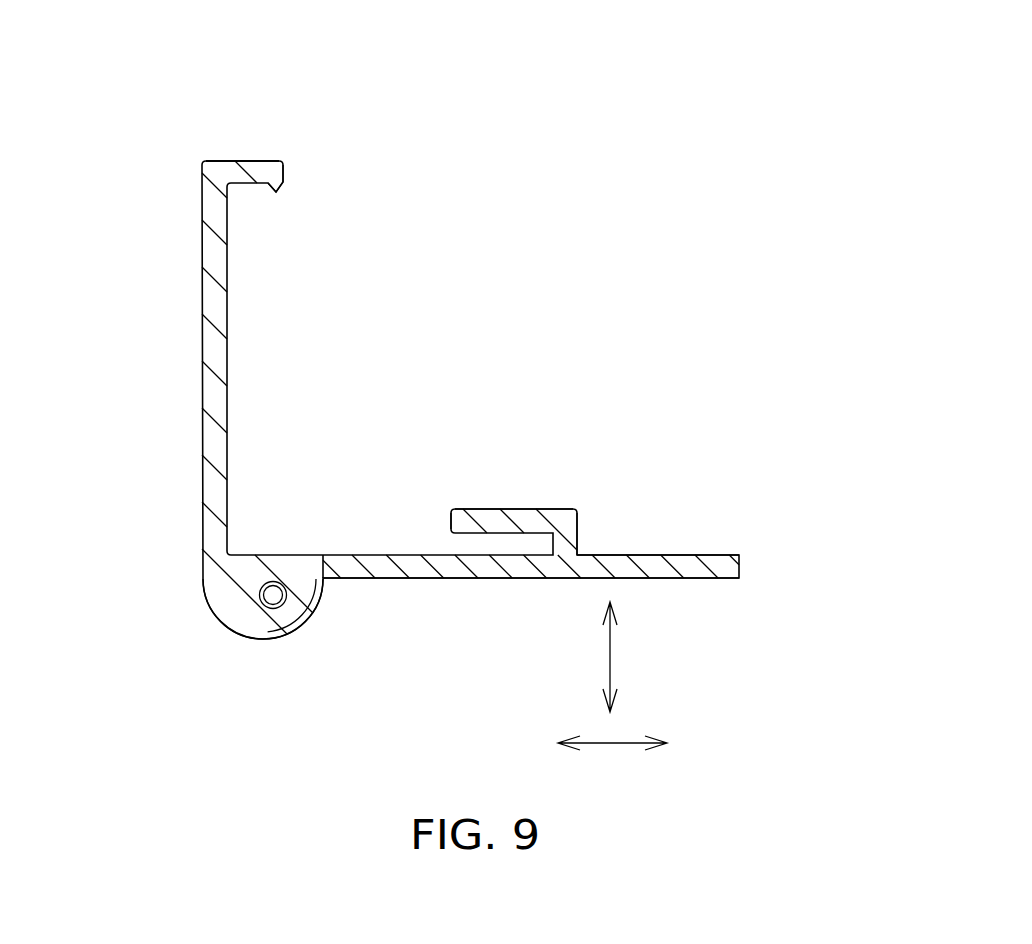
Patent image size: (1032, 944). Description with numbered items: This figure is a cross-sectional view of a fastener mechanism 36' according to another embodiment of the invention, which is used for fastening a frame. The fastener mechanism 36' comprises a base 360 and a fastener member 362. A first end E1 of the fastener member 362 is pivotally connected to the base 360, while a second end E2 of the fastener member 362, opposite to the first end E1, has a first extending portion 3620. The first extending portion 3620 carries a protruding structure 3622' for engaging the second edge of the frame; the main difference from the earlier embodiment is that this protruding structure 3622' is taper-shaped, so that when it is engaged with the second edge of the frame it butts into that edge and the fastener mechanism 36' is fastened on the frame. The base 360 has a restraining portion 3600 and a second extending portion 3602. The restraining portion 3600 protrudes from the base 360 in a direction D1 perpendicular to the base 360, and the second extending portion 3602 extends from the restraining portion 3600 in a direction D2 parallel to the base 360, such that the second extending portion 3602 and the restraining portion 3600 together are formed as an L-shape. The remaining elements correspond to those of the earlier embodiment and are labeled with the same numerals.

The fastener mechanism 36' is at (524, 420).
The fastener member 362 is at (203, 333).
The first extending portion 3620 is at (244, 161).
The protruding structure 3622' is at (335, 193).
The base 360 is at (467, 580).
The second extending portion 3602 is at (513, 508).
The restraining portion 3600 is at (578, 529).
The first end E1 is at (252, 640).
The second end E2 is at (227, 157).
The direction perpendicular to the base D1 is at (627, 657).
The direction parallel to the base D2 is at (612, 758).